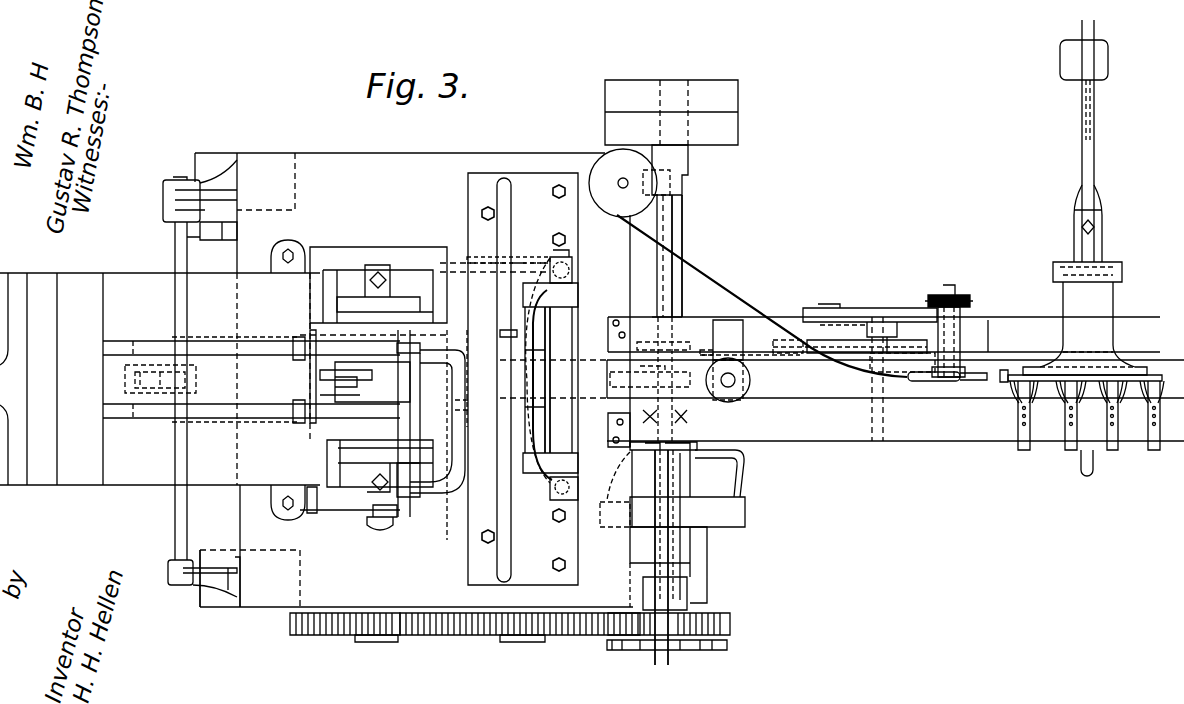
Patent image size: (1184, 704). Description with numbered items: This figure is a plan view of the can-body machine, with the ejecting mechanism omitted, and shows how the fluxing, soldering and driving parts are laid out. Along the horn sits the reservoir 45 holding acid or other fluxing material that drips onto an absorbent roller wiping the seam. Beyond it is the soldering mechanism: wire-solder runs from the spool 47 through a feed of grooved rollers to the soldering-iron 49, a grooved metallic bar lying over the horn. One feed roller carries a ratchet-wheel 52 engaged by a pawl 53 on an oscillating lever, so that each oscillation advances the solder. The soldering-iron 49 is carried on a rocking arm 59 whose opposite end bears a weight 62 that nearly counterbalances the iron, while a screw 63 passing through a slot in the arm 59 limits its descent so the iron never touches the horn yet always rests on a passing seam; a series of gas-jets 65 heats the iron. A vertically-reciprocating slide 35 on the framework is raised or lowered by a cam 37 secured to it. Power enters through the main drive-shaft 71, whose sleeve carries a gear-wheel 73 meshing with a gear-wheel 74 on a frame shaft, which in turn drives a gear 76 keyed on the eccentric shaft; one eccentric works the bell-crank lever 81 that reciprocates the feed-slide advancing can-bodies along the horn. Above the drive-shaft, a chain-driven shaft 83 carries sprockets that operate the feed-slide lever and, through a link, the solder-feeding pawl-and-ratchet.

The vertically-reciprocating slide 35 is at (507, 356).
The cam 37 is at (493, 432).
The reservoir 45 is at (752, 378).
The spool 47 is at (612, 165).
The soldering-iron 49 is at (1010, 381).
The ratchet-wheel 52 is at (962, 296).
The pawl 53 is at (925, 300).
The rocking arm 59 is at (1065, 296).
The weight 62 is at (1060, 58).
The screw 63 is at (1080, 222).
The gas-jets 65 is at (1072, 432).
The main drive-shaft 71 is at (683, 234).
The gear-wheel 73 is at (705, 630).
The gear-wheel 74 is at (512, 638).
The gear 76 is at (336, 632).
The bell-crank lever 81 is at (397, 376).
The shaft 83 is at (657, 258).